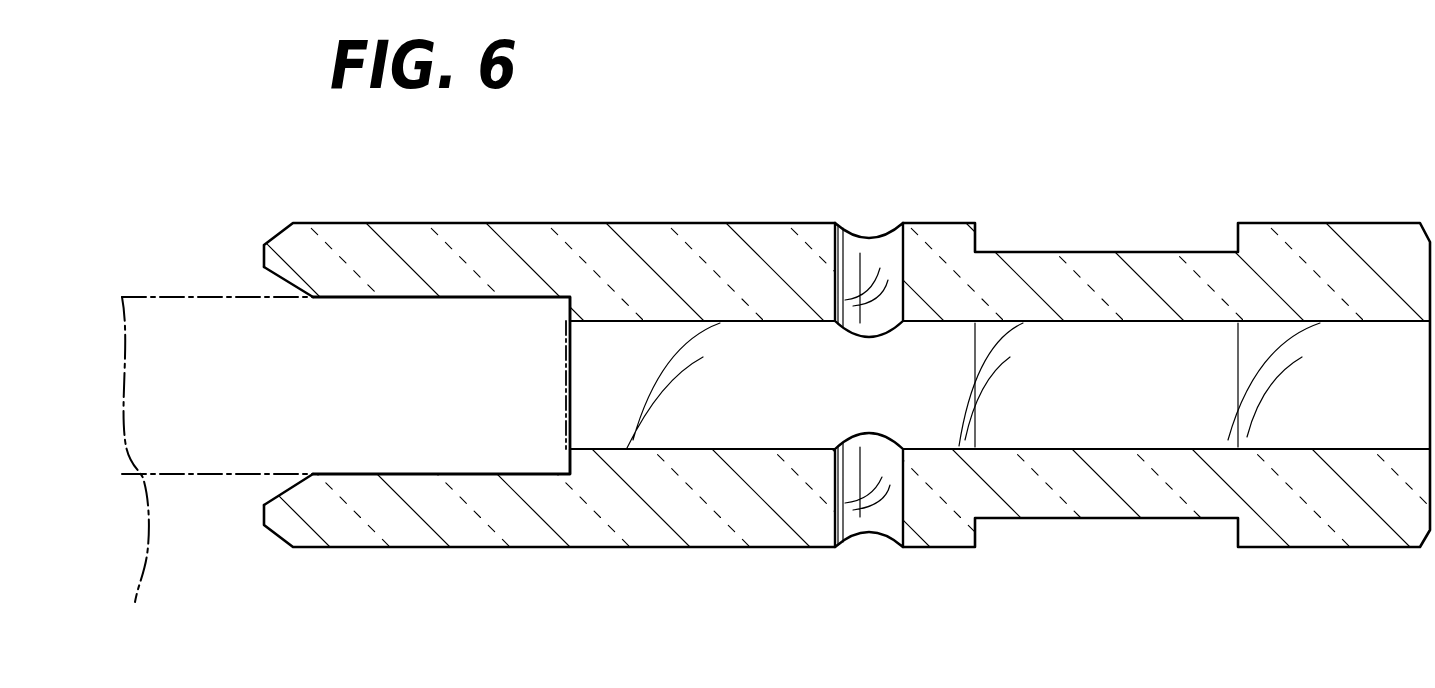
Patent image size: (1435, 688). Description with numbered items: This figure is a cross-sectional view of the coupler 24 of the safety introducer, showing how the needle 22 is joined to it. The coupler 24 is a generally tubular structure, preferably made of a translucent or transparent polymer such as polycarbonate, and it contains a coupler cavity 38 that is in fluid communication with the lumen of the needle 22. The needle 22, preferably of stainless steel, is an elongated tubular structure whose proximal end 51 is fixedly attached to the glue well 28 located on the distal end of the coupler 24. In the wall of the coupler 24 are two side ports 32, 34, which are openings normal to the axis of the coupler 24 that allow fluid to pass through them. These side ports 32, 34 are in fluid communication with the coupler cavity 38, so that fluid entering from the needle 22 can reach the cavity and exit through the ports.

The needle 22 is at (345, 468).
The coupler 24 is at (724, 202).
The glue well 28 is at (290, 492).
The side port 32 is at (864, 535).
The side port 34 is at (868, 230).
The coupler cavity 38 is at (747, 427).
The proximal end 51 is at (568, 400).